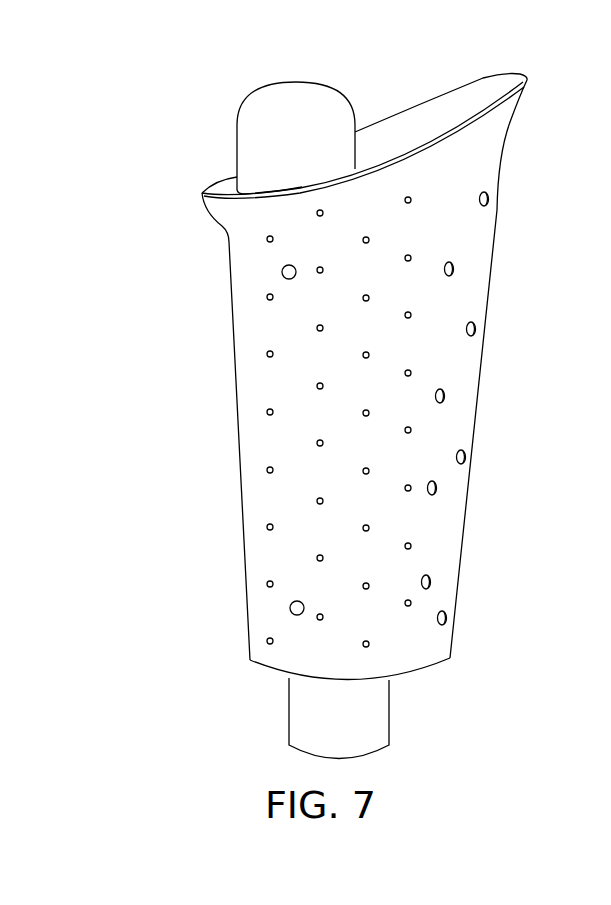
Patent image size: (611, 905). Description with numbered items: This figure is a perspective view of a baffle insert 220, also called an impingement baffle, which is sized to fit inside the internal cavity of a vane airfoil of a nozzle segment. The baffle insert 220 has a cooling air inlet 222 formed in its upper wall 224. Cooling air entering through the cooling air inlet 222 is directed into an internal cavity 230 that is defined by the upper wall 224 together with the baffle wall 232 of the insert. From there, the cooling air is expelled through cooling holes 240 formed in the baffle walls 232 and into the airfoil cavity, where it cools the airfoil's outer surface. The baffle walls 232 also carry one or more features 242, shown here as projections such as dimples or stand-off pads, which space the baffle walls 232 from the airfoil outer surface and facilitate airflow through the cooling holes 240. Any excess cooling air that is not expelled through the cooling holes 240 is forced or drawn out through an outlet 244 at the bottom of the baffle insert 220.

The baffle insert 220 is at (193, 67).
The cooling air inlet 222 is at (235, 146).
The upper wall 224 is at (420, 118).
The internal cavity 230 is at (262, 277).
The baffle wall 232 is at (245, 400).
The cooling holes 240 is at (266, 471).
The features 242 is at (452, 375).
The outlet 244 is at (289, 690).